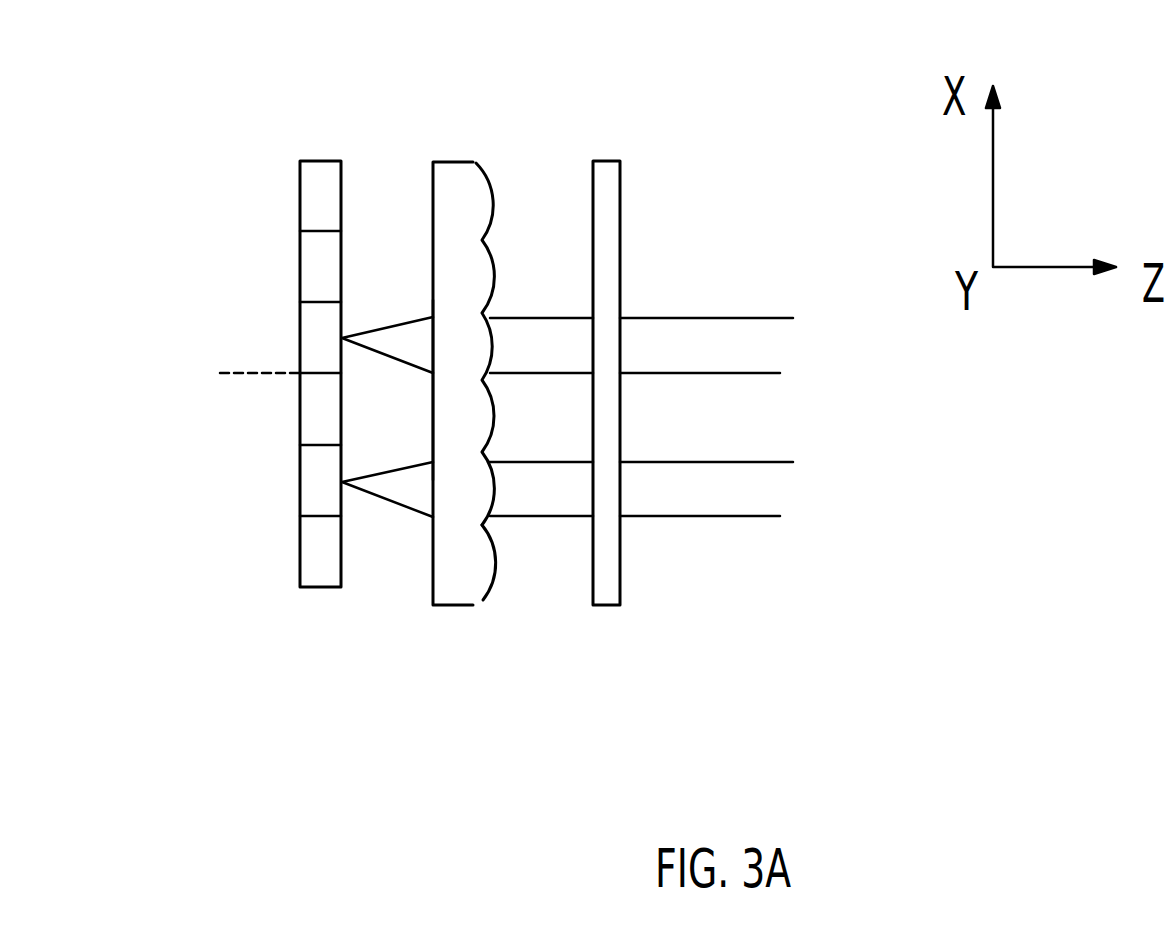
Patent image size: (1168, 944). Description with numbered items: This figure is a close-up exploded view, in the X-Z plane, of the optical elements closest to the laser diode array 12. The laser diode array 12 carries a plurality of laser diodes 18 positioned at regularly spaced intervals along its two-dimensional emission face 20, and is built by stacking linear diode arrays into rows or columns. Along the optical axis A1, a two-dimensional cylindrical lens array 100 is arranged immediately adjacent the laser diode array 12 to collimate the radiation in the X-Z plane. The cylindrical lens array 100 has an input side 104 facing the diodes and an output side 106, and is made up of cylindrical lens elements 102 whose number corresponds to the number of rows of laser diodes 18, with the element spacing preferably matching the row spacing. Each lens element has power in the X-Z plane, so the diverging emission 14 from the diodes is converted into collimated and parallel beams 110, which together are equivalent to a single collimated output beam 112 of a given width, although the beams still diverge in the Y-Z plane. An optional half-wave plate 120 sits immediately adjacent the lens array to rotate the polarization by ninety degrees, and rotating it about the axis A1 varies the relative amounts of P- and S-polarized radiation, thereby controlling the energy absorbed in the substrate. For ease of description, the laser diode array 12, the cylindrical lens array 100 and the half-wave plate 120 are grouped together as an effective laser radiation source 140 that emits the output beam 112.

The laser diode array 12 is at (269, 430).
The laser diodes 18 is at (300, 197).
The light beam cone 14 is at (368, 353).
The optical axis A1 is at (276, 378).
The emission face 20 is at (375, 533).
The cylindrical lens array 100 is at (467, 473).
The input side 104 is at (433, 573).
The cylindrical lens elements 102 is at (543, 474).
The output side 106 is at (503, 569).
The half-wave plate 120 is at (605, 605).
The collimated and parallel beams 110 is at (673, 373).
The output beam 112 is at (675, 392).
The effective laser radiation source 140 is at (633, 123).